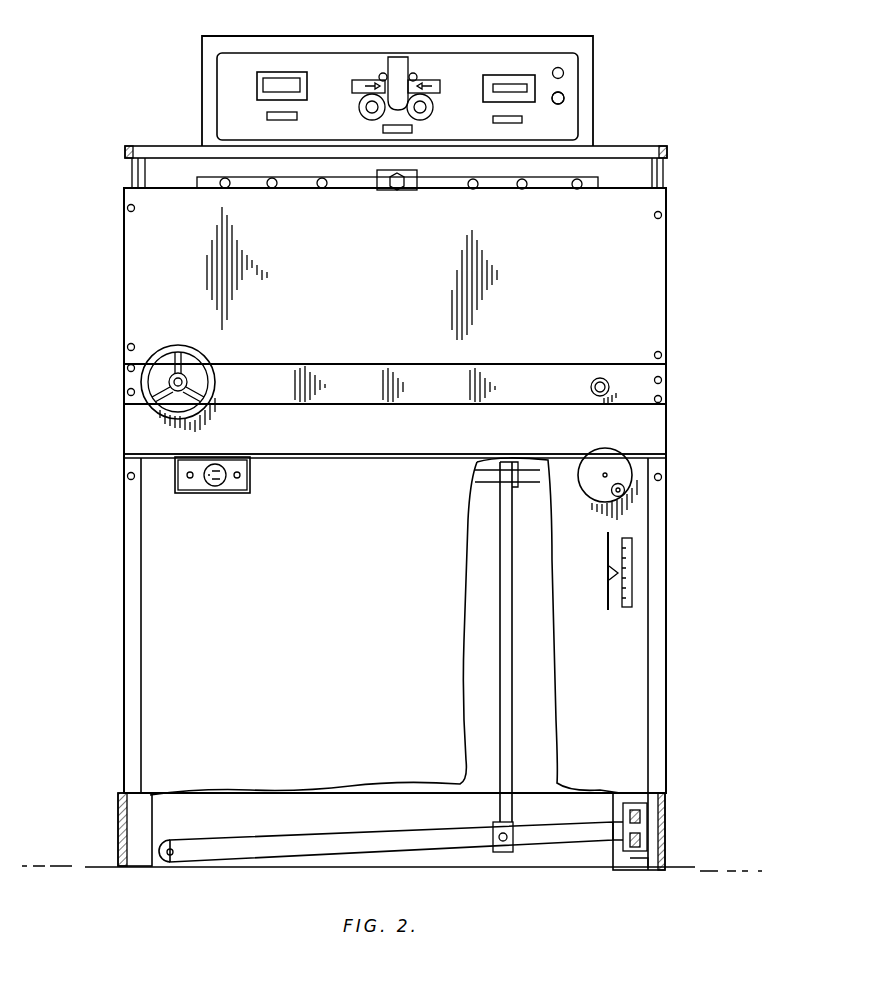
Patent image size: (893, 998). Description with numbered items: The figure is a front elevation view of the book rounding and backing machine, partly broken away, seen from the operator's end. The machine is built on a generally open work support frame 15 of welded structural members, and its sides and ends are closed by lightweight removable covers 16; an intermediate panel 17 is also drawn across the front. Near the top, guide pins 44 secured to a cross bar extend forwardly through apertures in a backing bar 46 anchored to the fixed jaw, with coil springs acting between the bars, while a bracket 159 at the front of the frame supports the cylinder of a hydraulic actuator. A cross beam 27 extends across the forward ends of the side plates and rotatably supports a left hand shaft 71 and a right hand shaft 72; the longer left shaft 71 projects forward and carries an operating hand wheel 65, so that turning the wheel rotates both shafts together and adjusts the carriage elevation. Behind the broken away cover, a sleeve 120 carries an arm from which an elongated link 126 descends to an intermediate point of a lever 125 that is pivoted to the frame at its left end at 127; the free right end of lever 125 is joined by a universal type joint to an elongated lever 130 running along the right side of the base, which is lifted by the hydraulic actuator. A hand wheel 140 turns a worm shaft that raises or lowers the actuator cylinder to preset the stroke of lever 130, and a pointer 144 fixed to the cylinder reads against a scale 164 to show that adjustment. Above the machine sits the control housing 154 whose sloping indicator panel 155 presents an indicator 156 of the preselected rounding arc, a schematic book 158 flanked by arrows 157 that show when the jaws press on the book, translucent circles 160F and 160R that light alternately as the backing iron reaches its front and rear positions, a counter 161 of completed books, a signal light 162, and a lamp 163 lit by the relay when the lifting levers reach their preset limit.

The work support frame 15 is at (670, 640).
The removable covers 16 is at (157, 664).
The intermediate panel 17 is at (659, 443).
The cross beam 27 is at (672, 388).
The guide pins 44 is at (520, 190).
The backing bar 46 is at (556, 190).
The operating hand wheel 65 is at (186, 350).
The left hand shaft 71 is at (210, 380).
The right hand shaft 72 is at (604, 378).
The sleeve 120 is at (470, 487).
The lever 125 is at (556, 832).
The link 126 is at (515, 650).
The pivotal connection 127 is at (176, 850).
The elongated lever 130 is at (650, 855).
The hand wheel 140 is at (622, 476).
The pointer 144 is at (602, 573).
The control housing 154 is at (533, 42).
The indicator panel 155 is at (566, 97).
The indicator 156 is at (273, 80).
The arrows 157 is at (379, 86).
The book representation 158 is at (432, 30).
The bracket 159 is at (405, 190).
The front position indicator 160F is at (360, 110).
The rear position indicator 160R is at (425, 114).
The counter 161 is at (520, 68).
The indicator light 162 is at (563, 72).
The lamp 163 is at (563, 102).
The scale 164 is at (632, 538).